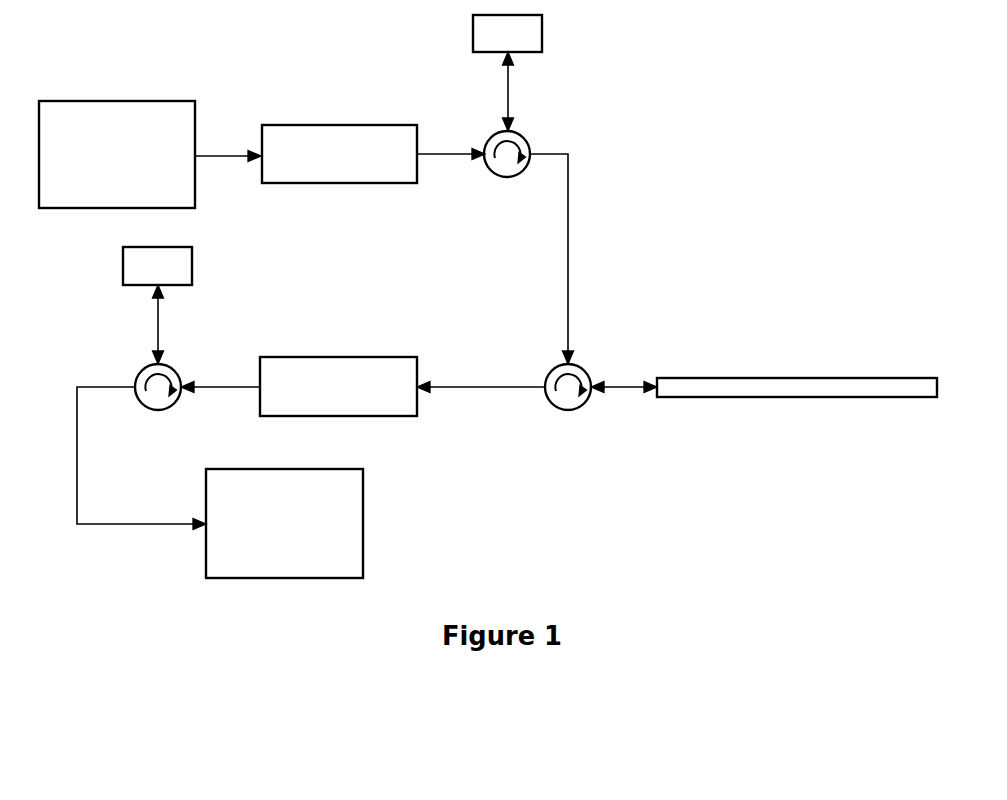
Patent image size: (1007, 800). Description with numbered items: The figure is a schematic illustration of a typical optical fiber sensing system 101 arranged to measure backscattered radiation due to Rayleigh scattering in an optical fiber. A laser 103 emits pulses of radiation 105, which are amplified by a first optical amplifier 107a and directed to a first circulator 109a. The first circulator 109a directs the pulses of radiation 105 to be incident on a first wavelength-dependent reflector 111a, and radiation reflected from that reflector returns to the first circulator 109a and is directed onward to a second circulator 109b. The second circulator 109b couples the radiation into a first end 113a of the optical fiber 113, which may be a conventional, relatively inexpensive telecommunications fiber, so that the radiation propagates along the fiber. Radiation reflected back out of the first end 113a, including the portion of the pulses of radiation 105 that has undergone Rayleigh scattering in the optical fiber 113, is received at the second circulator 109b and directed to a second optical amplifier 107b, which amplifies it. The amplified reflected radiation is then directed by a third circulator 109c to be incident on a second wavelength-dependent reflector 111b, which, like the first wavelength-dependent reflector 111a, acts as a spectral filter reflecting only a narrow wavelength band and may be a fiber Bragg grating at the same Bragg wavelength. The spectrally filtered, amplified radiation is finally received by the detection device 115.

The optical fiber sensing system 101 is at (378, 75).
The laser 103 is at (117, 154).
The pulses of radiation 105 is at (212, 154).
The first optical amplifier 107a is at (339, 154).
The second optical amplifier 107b is at (338, 386).
The first circulator 109a is at (495, 134).
The second circulator 109b is at (556, 367).
The third circulator 109c is at (147, 367).
The first wavelength-dependent reflector 111a is at (507, 33).
The second wavelength-dependent reflector 111b is at (157, 266).
The optical fiber 113 is at (840, 378).
The first end of the optical fiber 113a is at (657, 378).
The detection device 115 is at (284, 523).